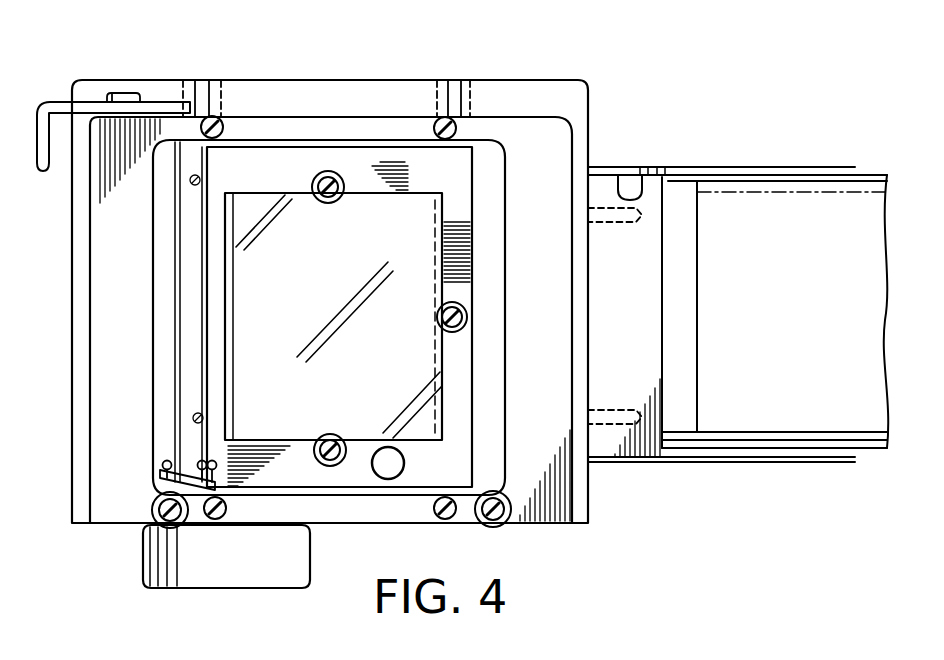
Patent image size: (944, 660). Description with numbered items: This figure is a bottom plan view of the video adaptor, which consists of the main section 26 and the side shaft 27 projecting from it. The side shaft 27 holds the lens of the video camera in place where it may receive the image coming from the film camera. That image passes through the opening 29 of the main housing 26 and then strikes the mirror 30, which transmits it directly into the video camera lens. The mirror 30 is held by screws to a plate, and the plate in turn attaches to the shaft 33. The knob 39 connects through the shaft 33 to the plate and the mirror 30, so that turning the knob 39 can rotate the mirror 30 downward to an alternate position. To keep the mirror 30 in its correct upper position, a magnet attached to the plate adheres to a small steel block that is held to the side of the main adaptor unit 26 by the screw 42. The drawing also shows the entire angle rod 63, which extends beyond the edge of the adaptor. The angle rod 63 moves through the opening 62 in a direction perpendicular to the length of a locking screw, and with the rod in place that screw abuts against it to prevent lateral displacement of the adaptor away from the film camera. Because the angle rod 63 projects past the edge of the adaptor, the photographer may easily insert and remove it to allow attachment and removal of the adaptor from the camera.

The main section 26 is at (327, 92).
The side shaft 27 is at (780, 233).
The opening 29 is at (505, 380).
The mirror 30 is at (356, 385).
The shaft 33 is at (192, 338).
The knob 39 is at (266, 561).
The screw 42 is at (165, 465).
The opening 62 is at (198, 82).
The angle rod 63 is at (53, 102).